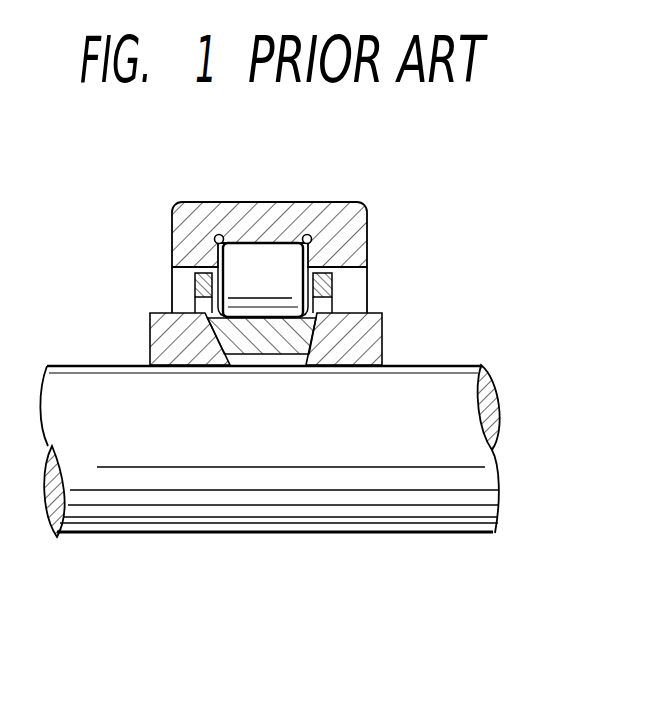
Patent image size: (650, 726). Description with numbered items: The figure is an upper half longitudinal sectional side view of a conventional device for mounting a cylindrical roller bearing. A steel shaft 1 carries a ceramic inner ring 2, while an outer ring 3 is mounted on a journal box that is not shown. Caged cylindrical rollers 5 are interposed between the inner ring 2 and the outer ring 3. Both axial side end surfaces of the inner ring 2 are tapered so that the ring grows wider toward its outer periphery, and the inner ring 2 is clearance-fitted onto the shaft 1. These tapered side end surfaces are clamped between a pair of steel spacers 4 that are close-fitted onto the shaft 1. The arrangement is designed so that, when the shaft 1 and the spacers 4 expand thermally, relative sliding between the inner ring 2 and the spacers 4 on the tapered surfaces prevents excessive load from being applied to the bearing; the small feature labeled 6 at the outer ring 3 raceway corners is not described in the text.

The shaft 1 is at (75, 373).
The inner ring 2 is at (245, 342).
The outer ring 3 is at (199, 209).
The spacers 4 is at (155, 312).
The cylindrical rollers 5 is at (281, 256).
The raceway groove 6 is at (341, 262).